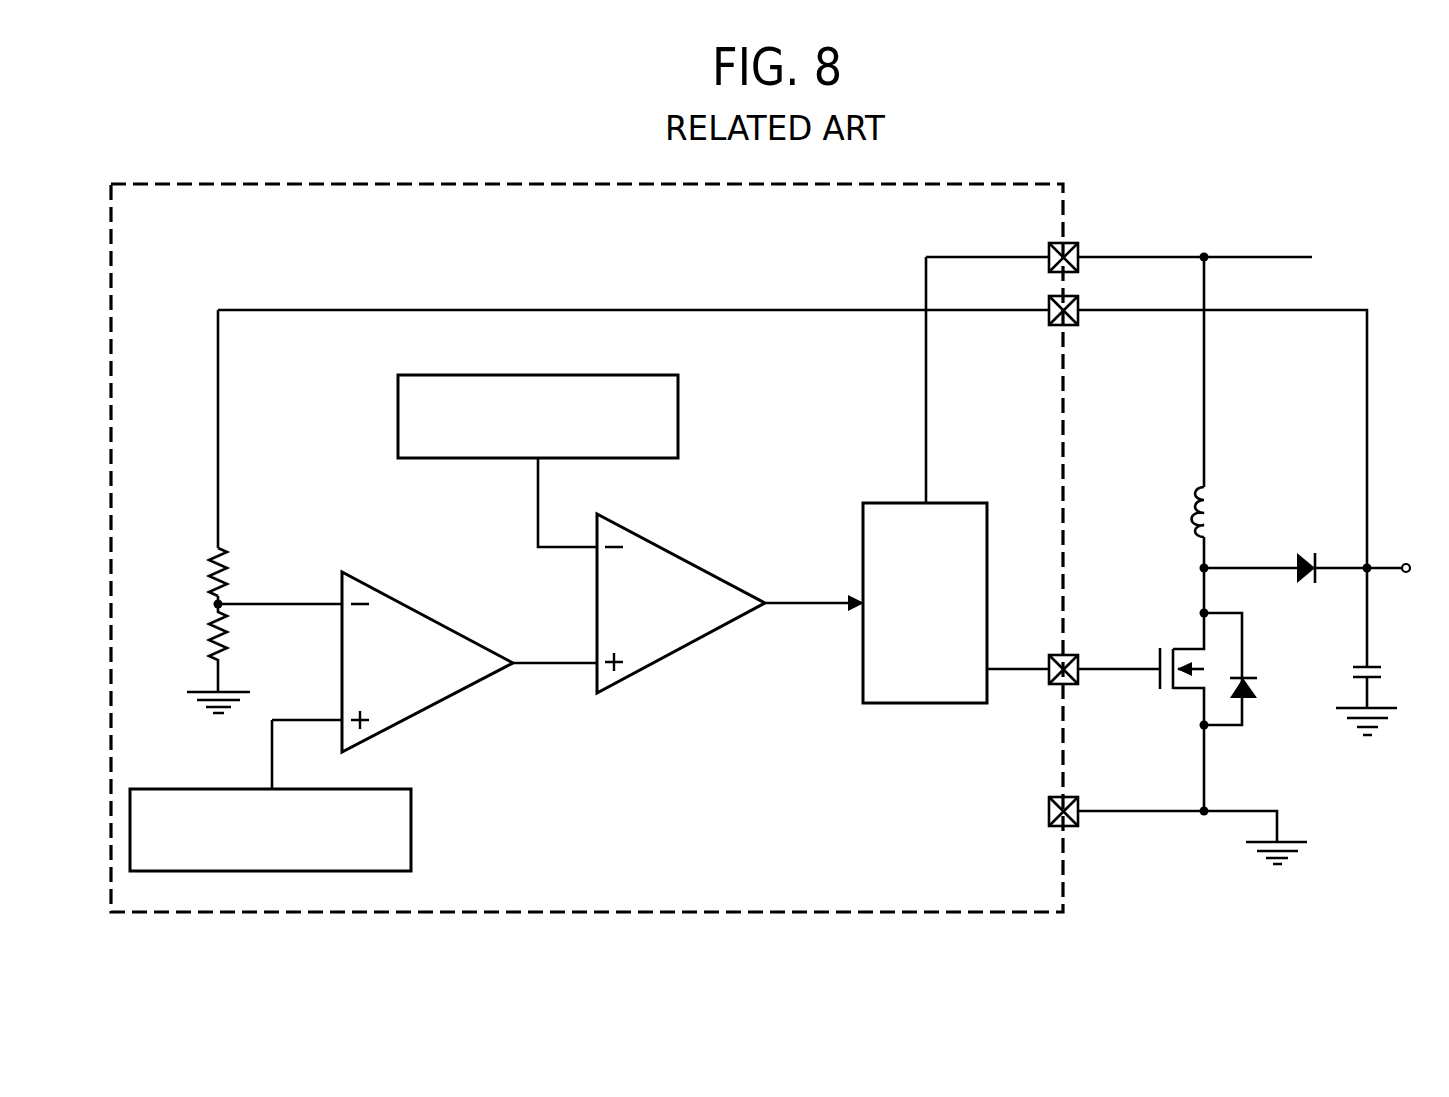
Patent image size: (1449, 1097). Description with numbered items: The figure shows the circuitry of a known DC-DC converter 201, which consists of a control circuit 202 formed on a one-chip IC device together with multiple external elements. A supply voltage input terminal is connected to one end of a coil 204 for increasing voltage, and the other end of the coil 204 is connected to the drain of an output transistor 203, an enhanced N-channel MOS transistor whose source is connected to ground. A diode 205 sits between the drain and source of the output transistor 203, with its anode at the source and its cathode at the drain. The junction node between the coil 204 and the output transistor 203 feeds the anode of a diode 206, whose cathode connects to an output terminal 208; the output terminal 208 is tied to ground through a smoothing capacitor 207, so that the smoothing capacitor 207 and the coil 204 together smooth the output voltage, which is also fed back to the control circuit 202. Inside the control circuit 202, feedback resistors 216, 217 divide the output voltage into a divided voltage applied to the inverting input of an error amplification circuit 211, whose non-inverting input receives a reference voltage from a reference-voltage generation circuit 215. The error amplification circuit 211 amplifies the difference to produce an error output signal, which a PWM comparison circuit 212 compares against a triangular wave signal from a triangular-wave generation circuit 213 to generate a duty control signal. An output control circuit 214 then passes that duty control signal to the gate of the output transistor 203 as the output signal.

The DC-DC converter 201 is at (938, 152).
The control circuit 202 is at (1010, 185).
The output transistor 203 is at (1156, 651).
The coil 204 is at (1209, 500).
The diode 205 is at (1248, 700).
The diode 206 is at (1302, 555).
The smoothing capacitor 207 is at (1361, 666).
The output terminal 208 is at (1407, 574).
The error amplification circuit 211 is at (424, 616).
The PWM comparison circuit 212 is at (705, 540).
The triangular-wave generation circuit 213 is at (650, 362).
The output control circuit 214 is at (950, 503).
The reference-voltage generation circuit 215 is at (372, 789).
The feedback resistor 216 is at (225, 551).
The feedback resistor 217 is at (228, 628).